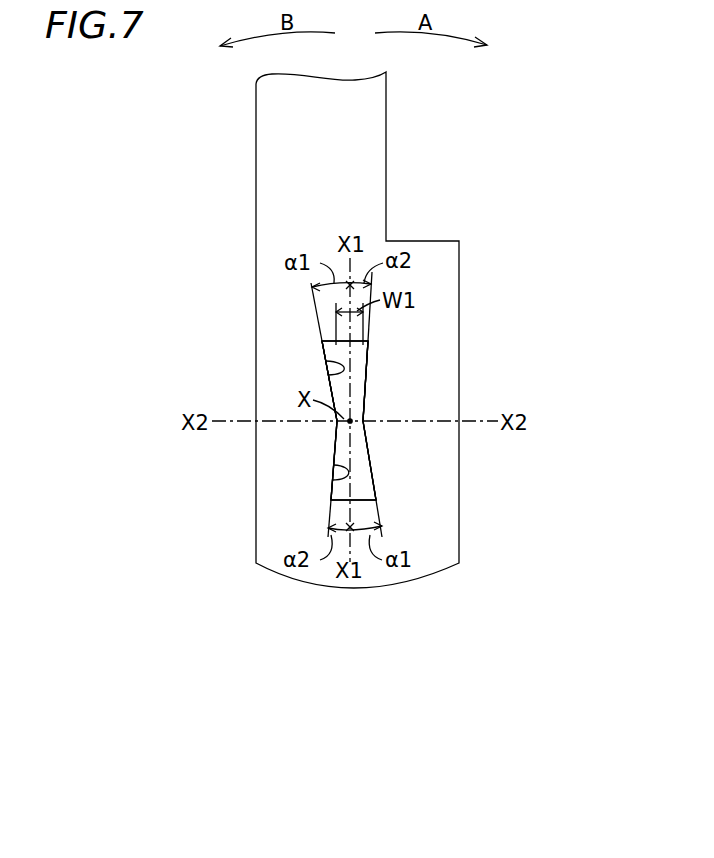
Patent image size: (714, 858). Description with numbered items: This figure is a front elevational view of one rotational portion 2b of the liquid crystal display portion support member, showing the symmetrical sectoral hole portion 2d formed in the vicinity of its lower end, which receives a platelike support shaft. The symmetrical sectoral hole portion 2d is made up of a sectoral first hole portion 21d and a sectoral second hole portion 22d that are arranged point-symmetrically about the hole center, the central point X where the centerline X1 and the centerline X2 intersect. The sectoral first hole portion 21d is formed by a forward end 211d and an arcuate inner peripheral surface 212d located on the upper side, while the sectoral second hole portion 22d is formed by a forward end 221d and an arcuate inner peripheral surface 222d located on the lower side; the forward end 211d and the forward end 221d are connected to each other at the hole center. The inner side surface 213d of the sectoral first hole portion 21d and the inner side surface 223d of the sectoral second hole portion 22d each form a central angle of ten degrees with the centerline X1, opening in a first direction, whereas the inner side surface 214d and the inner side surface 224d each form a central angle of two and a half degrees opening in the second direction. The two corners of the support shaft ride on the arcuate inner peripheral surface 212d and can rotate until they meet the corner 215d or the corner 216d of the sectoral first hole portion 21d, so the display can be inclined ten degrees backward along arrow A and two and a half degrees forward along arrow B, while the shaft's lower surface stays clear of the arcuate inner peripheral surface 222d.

The rotational portion 2b is at (368, 202).
The symmetrical sectoral hole portion 2d is at (322, 357).
The sectoral first hole portion 21d is at (337, 380).
The sectoral second hole portion 22d is at (336, 440).
The forward end 211d is at (363, 420).
The arcuate inner peripheral surface 212d is at (322, 341).
The inner side surface 213d is at (324, 352).
The inner side surface 214d is at (368, 352).
The corner 215d is at (323, 346).
The corner 216d is at (369, 345).
The forward end 221d is at (364, 424).
The arcuate inner peripheral surface 222d is at (332, 496).
The inner side surface 223d is at (367, 452).
The inner side surface 224d is at (333, 471).